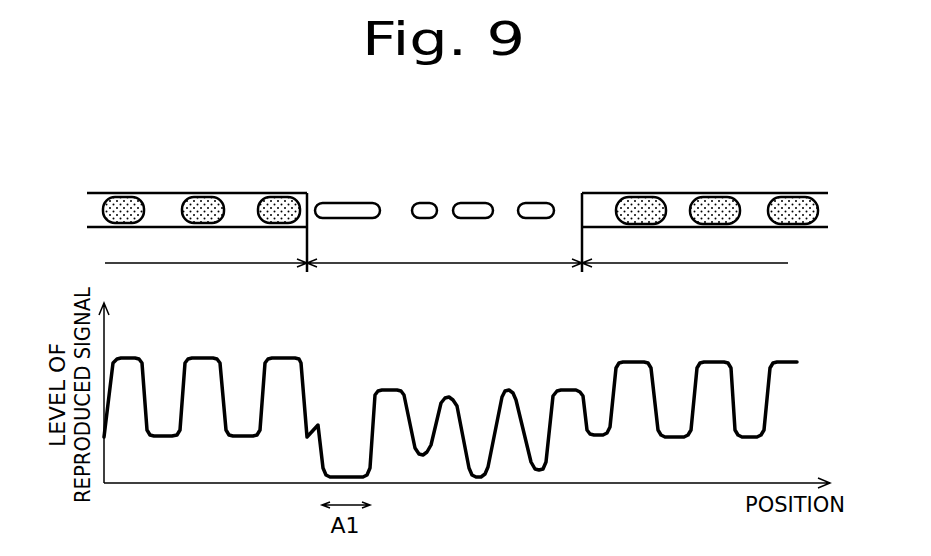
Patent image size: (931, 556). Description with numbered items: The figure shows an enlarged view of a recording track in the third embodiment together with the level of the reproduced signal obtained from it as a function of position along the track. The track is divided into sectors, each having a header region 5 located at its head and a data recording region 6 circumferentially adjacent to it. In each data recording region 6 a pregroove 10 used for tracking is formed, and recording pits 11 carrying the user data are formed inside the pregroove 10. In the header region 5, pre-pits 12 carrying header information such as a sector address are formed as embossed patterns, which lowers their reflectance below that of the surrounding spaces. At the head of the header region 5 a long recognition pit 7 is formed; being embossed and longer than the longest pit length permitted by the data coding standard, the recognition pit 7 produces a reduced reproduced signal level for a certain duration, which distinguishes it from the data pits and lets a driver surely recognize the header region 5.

The header region 5 is at (444, 276).
The data recording region 6 is at (460, 288).
The recognition pit 7 is at (347, 208).
The pregroove 10 is at (160, 203).
The recording pit 11 is at (198, 205).
The pre-pit 12 is at (425, 208).